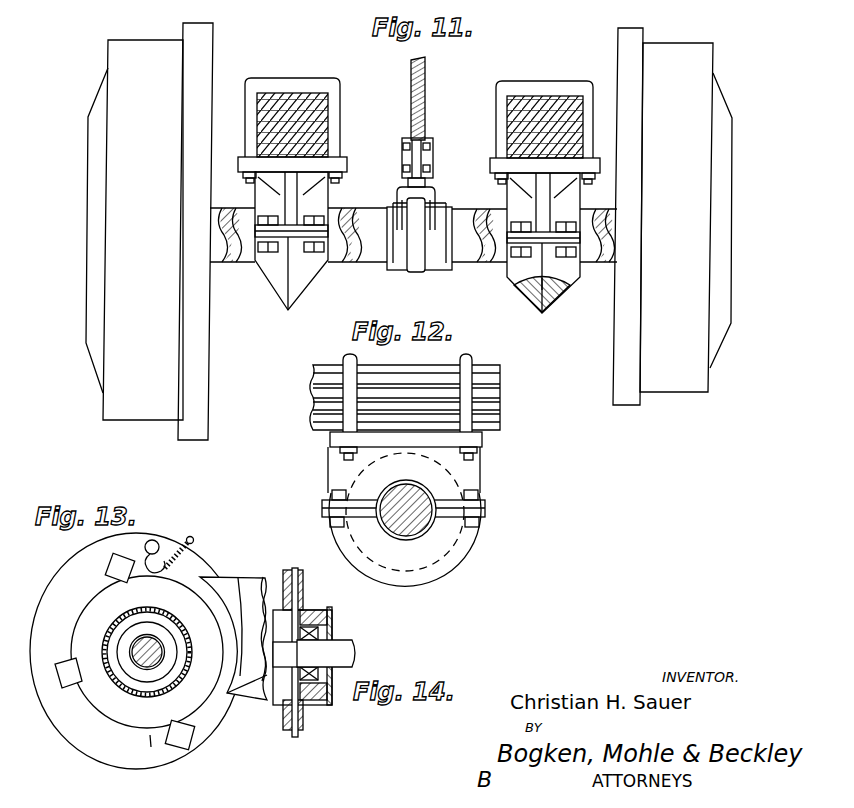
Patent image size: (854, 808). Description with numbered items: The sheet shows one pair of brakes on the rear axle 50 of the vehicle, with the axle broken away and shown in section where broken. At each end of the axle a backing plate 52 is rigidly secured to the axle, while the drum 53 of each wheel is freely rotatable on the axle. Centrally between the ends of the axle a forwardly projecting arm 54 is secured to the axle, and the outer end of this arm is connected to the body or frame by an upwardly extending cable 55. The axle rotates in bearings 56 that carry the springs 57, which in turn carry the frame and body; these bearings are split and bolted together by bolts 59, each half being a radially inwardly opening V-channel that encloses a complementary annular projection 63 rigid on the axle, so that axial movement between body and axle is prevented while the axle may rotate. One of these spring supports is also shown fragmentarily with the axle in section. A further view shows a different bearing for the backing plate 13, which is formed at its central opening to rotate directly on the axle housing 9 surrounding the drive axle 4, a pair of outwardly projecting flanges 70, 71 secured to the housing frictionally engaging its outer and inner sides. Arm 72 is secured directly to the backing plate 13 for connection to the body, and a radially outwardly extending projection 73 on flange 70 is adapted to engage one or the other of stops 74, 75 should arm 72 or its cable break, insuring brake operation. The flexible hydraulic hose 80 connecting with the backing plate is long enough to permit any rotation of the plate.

In FIG. 13, the drive axle 4 is at (147, 662).
In FIG. 14, the drive axle 4 is at (343, 646).
In FIG. 13, the axle housing 9 is at (190, 642).
In FIG. 14, the axle housing 9 is at (276, 607).
In FIG. 14, the backing plate 13 is at (298, 570).
In FIG. 11, the rear axle 50 is at (336, 258).
In FIG. 12, the rear axle 50 is at (420, 503).
In FIG. 11, the backing plate 52 is at (208, 42).
In FIG. 11, the drum 53 is at (144, 47).
In FIG. 11, the forwardly projecting arm 54 is at (413, 265).
In FIG. 11, the cable 55 is at (428, 114).
In FIG. 11, the bearings 56 is at (280, 294).
In FIG. 12, the bearings 56 is at (476, 544).
In FIG. 11, the springs 57 is at (298, 90).
In FIG. 12, the springs 57 is at (440, 376).
In FIG. 11, the bolts 59 is at (314, 250).
In FIG. 11, the annular projection 63 is at (524, 286).
In FIG. 12, the annular projection 63 is at (466, 561).
In FIG. 13, the flange 70 is at (96, 607).
In FIG. 14, the flange 70 is at (276, 605).
In FIG. 14, the flange 71 is at (304, 586).
In FIG. 13, the arm 72 is at (252, 678).
In FIG. 13, the projection 73 is at (68, 685).
In FIG. 13, the stop 74 is at (122, 565).
In FIG. 13, the stop 75 is at (188, 728).
In FIG. 13, the flexible hydraulic hose 80 is at (196, 540).